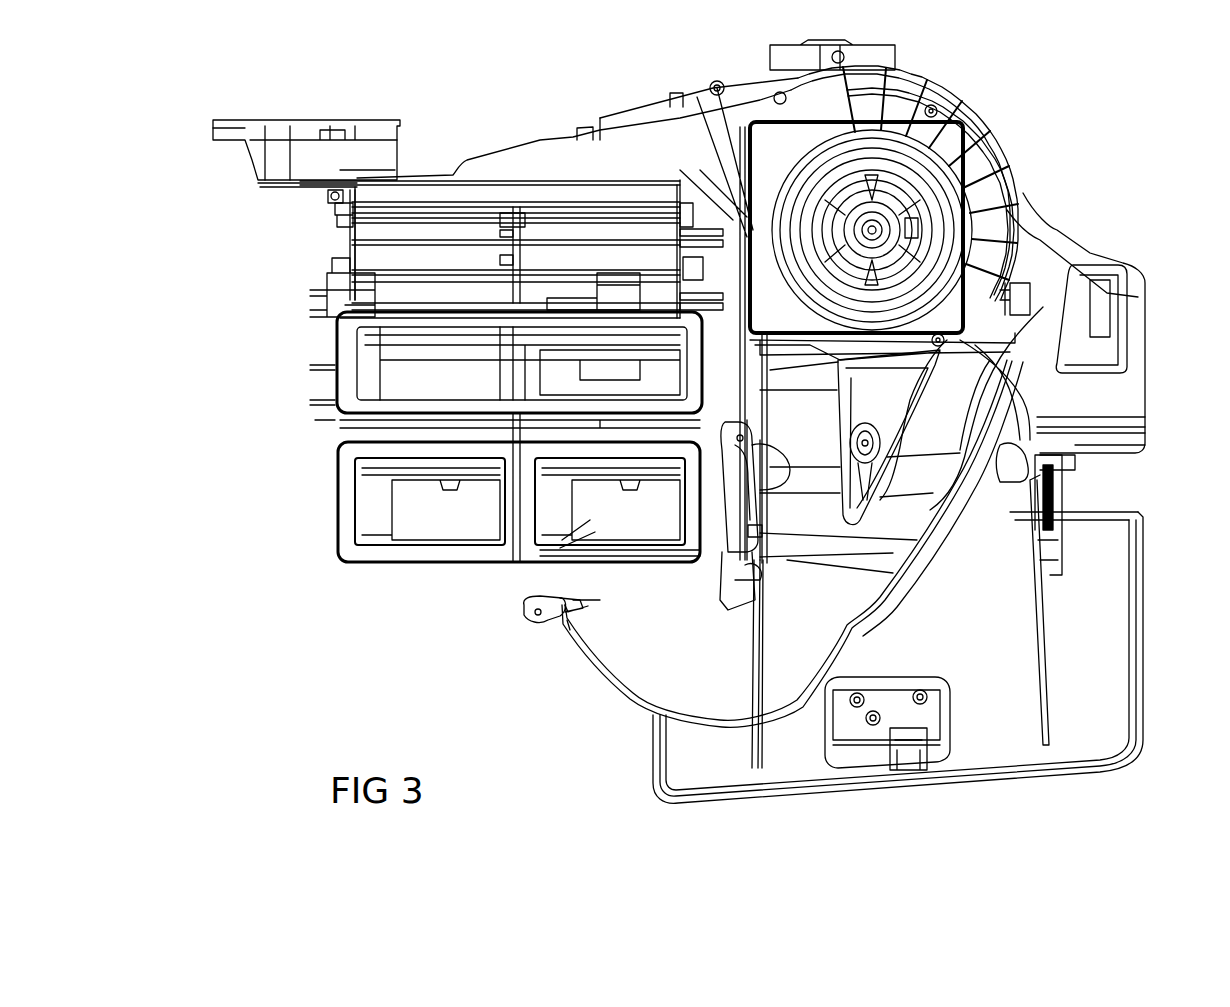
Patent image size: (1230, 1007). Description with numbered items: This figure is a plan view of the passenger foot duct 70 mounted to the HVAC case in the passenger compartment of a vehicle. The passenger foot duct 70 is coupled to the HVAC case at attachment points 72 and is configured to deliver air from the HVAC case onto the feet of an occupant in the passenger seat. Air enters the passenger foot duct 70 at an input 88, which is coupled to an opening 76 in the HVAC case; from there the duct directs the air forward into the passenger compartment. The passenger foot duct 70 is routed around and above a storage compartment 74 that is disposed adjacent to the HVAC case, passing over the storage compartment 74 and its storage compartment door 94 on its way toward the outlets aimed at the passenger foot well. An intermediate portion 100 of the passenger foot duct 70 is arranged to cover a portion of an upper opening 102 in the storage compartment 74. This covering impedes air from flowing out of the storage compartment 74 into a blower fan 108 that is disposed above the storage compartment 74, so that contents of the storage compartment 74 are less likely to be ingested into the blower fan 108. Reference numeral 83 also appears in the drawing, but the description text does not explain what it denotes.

The passenger foot duct 70 is at (645, 688).
The attachment points 72 is at (876, 440).
The storage compartment 74 is at (1007, 523).
The opening 76 is at (567, 520).
The filter frame 83 is at (358, 365).
The input 88 is at (562, 540).
The storage compartment door 94 is at (1090, 720).
The intermediate portion 100 is at (900, 510).
The upper opening 102 is at (1010, 450).
The blower fan 108 is at (925, 212).